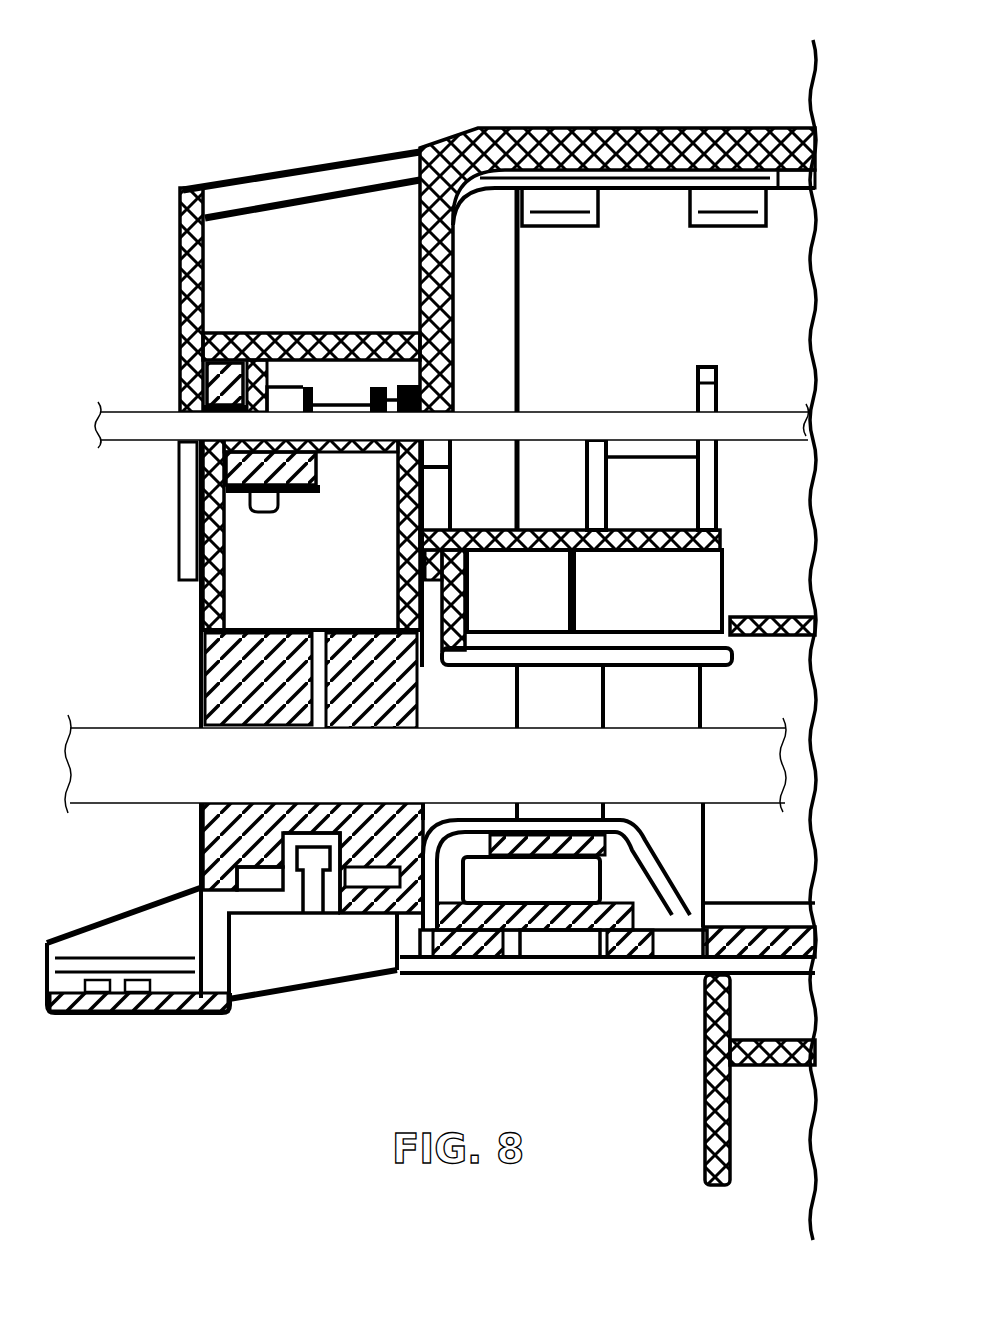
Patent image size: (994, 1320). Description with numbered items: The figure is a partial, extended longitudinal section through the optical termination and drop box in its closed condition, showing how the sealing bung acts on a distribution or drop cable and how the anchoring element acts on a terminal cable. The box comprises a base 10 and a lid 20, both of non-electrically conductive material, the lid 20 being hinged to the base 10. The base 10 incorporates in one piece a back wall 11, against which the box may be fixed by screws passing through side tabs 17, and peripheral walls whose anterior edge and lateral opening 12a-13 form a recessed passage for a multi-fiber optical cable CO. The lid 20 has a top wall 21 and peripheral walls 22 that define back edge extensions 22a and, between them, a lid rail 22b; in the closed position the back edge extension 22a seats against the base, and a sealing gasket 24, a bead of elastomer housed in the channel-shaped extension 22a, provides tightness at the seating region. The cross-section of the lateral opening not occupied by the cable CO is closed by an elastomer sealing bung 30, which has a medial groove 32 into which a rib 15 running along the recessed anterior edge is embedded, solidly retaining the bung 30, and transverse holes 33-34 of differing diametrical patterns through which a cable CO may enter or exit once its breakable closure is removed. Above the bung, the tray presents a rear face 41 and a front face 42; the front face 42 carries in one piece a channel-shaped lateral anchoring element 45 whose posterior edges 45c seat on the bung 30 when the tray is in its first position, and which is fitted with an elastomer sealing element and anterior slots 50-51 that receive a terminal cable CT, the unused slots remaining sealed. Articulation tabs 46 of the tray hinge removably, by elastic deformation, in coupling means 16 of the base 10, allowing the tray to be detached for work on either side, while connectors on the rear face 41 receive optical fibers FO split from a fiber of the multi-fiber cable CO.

The base 10 is at (565, 989).
The back wall 11 is at (751, 916).
The anterior edge and lateral opening 12a-13 is at (268, 880).
The rib 15 is at (323, 828).
The coupling means 16 is at (652, 448).
The side tabs 17 is at (79, 1022).
The lid 20 is at (462, 112).
The top wall 21 is at (652, 192).
The peripheral walls 22 is at (627, 247).
The back edge extension 22a is at (180, 378).
The lid rail 22b is at (325, 384).
The sealing gasket 24 is at (240, 408).
The elastomer sealing bung 30 is at (194, 660).
The groove 32 is at (293, 876).
The transverse holes 33-34 is at (238, 802).
The rear face 41 is at (772, 642).
The front face 42 is at (654, 516).
The lateral anchoring element 45 is at (194, 606).
The posterior edges 45c is at (220, 642).
The articulation tabs 46 is at (581, 470).
The elastomer sealing element and anterior slots 50-51 is at (278, 381).
The terminal cable CT is at (163, 400).
The multi-fiber optical cable CO is at (168, 724).
The optical fibers FO is at (790, 748).